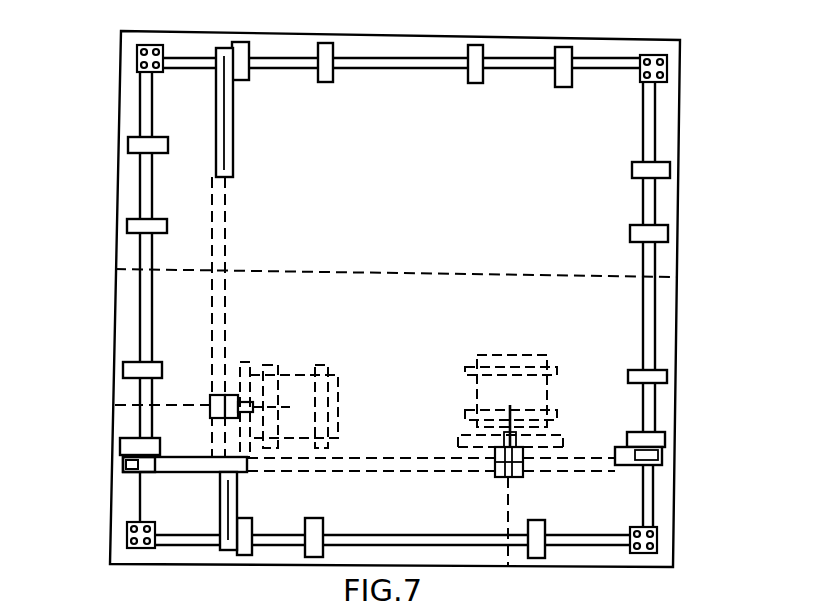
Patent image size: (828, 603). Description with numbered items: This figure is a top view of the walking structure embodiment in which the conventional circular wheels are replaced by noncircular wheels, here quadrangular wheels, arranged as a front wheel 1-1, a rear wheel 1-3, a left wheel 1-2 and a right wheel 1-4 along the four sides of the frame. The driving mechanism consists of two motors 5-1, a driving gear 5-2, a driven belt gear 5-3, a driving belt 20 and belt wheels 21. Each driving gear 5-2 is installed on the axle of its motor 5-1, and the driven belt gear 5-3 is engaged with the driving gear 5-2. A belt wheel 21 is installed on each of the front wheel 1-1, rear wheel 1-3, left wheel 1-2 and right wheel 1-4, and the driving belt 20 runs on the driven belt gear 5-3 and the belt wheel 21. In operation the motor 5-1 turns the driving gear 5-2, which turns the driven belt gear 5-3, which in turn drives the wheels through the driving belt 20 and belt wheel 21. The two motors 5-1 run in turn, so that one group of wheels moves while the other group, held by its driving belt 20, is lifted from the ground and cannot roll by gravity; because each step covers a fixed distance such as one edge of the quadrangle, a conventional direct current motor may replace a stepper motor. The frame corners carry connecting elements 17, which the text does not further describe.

The front wheel 1-1 is at (401, 48).
The left wheel 1-2 is at (187, 265).
The rear wheel 1-3 is at (446, 508).
The right wheel 1-4 is at (685, 304).
The corner connector 17 is at (420, 284).
The driving belt 20 is at (472, 237).
The belt wheel 21 is at (149, 472).
The motor 5-1 is at (390, 346).
The driving gear 5-2 is at (165, 371).
The driven belt gear 5-3 is at (601, 377).